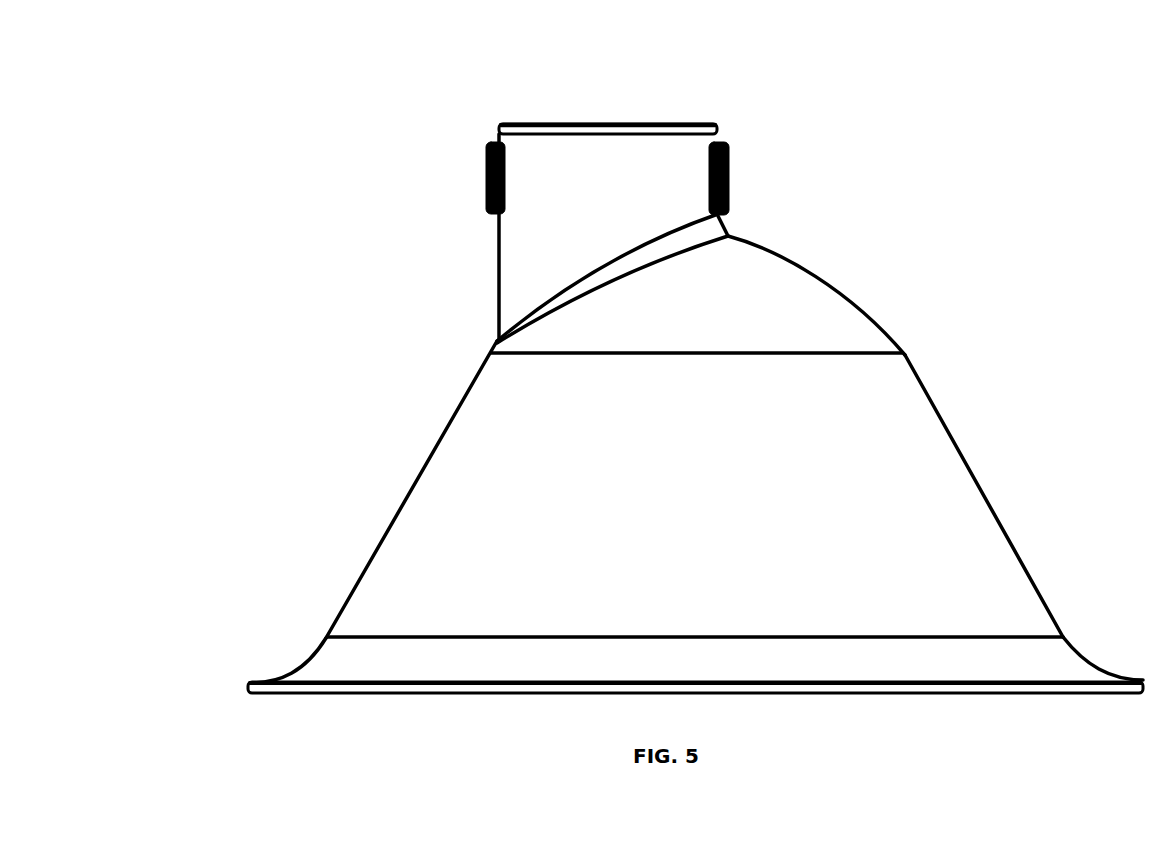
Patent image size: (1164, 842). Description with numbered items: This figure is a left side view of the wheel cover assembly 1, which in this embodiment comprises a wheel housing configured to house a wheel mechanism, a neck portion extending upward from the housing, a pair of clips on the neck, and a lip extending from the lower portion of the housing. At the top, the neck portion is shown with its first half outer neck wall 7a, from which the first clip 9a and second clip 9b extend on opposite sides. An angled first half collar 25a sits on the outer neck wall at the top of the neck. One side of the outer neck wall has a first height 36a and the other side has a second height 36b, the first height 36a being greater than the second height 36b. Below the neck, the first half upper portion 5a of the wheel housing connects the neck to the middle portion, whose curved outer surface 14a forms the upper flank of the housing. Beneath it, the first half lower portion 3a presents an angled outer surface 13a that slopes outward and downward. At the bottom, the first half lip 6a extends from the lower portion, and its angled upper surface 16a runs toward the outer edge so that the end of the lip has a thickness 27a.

The wheel cover assembly 1 is at (304, 213).
The first half collar 25a is at (545, 127).
The first clip 9a is at (505, 192).
The second clip 9b is at (712, 182).
The first half outer neck wall 7a is at (605, 178).
The first half upper portion 5a is at (717, 223).
The first height 36a is at (478, 138).
The second height 36b is at (737, 138).
The curved outer surface 14a is at (755, 326).
The first half lower portion 3a is at (478, 455).
The angled outer surface 13a is at (729, 501).
The angled upper surface 16a is at (792, 671).
The first half lip 6a is at (340, 657).
The thickness 27a is at (257, 686).